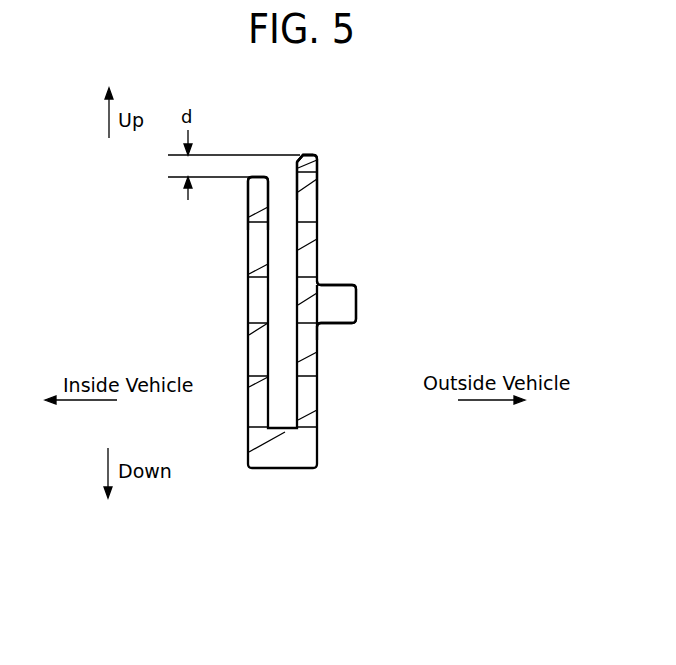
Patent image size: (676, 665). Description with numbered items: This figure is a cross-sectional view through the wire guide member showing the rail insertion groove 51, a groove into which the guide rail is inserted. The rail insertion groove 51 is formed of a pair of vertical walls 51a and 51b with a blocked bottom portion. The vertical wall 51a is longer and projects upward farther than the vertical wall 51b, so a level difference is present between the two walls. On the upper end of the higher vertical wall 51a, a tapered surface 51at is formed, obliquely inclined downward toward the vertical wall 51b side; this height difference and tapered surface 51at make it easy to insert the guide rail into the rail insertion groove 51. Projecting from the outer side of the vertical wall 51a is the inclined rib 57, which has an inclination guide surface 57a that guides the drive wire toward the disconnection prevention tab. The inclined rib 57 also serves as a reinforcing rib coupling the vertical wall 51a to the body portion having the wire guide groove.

The rail insertion groove 51 is at (280, 218).
The vertical wall 51a is at (310, 168).
The tapered surface 51at is at (300, 160).
The vertical wall 51b is at (258, 200).
The inclined rib 57 is at (330, 327).
The inclination guide surface 57a is at (358, 303).